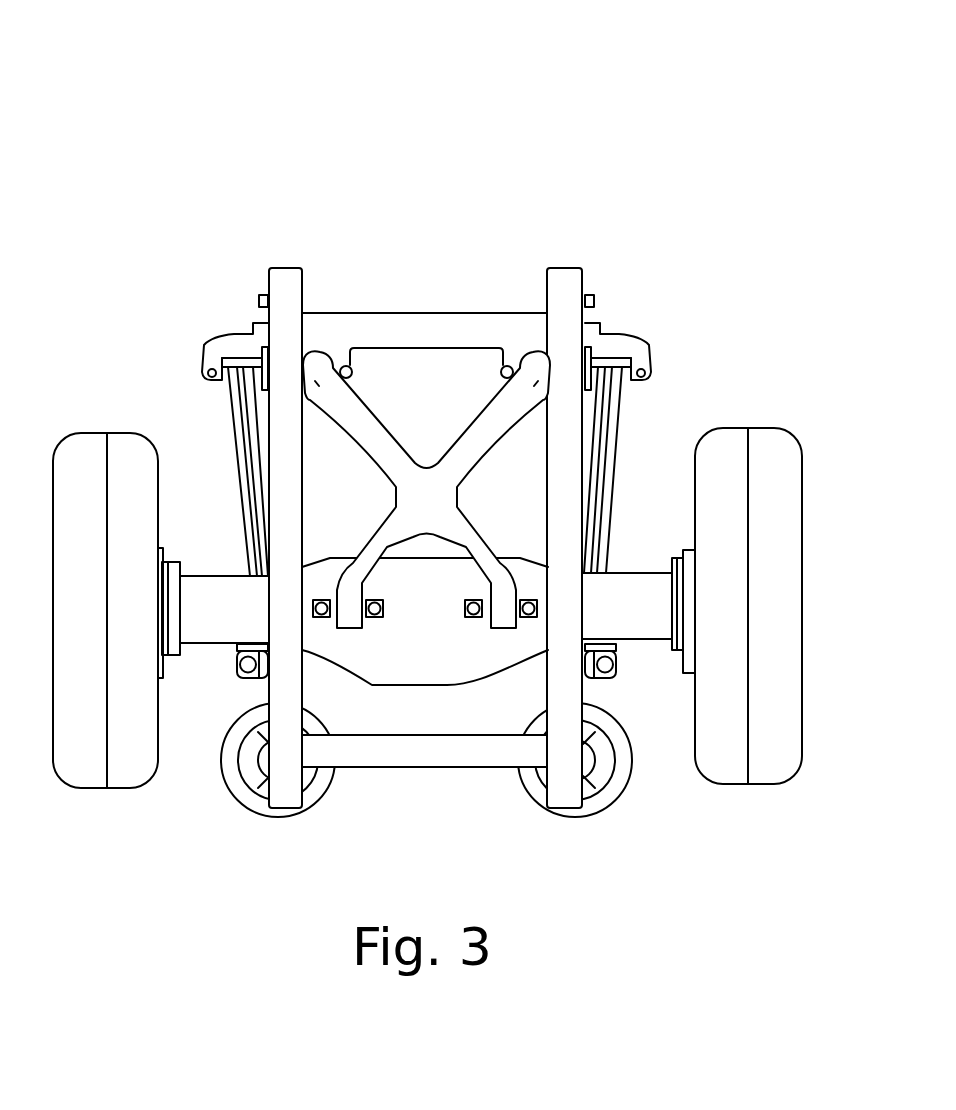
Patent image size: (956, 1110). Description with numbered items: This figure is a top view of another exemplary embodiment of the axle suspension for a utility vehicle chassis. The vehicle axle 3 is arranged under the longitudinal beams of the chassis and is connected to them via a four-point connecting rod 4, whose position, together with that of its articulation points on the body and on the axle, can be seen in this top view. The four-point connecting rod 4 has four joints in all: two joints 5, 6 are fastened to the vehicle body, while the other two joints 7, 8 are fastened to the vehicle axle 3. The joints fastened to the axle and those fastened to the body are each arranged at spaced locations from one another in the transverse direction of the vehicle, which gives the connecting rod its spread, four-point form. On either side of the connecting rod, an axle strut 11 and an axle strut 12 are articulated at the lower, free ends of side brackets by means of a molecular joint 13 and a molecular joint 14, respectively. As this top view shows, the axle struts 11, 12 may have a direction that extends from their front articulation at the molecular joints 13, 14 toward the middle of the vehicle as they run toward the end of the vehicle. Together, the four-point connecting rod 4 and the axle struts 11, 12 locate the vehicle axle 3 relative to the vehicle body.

The vehicle axle 3 is at (618, 608).
The four-point connecting rod 4 is at (414, 505).
The joint 5 is at (320, 372).
The joint 6 is at (525, 375).
The joint 7 is at (350, 608).
The joint 8 is at (500, 607).
The axle strut 11 is at (605, 460).
The axle strut 12 is at (250, 480).
The molecular joint 13 is at (617, 362).
The molecular joint 14 is at (233, 377).